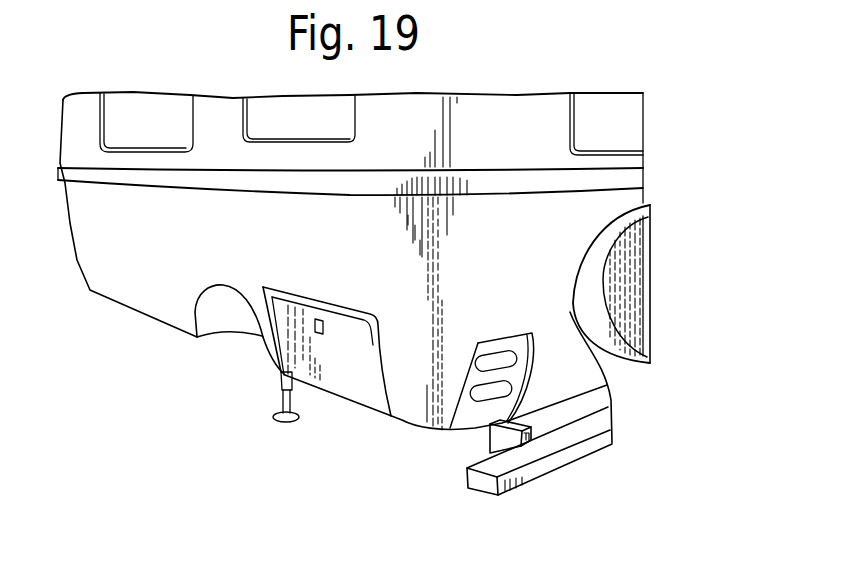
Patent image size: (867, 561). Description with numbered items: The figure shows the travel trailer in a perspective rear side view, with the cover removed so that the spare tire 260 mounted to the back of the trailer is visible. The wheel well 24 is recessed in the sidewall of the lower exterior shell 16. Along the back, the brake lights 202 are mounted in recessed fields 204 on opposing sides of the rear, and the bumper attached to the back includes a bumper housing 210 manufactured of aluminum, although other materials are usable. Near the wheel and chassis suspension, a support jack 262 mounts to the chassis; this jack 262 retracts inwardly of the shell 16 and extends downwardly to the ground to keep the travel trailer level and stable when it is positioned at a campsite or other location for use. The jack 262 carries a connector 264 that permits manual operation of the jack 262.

The lower exterior shell 16 is at (318, 249).
The wheel well 24 is at (218, 296).
The brake lights 202 is at (482, 358).
The recessed fields 204 is at (475, 392).
The bumper housing 210 is at (569, 313).
The spare tire 260 is at (605, 268).
The support jack 262 is at (280, 388).
The connector 264 is at (318, 318).